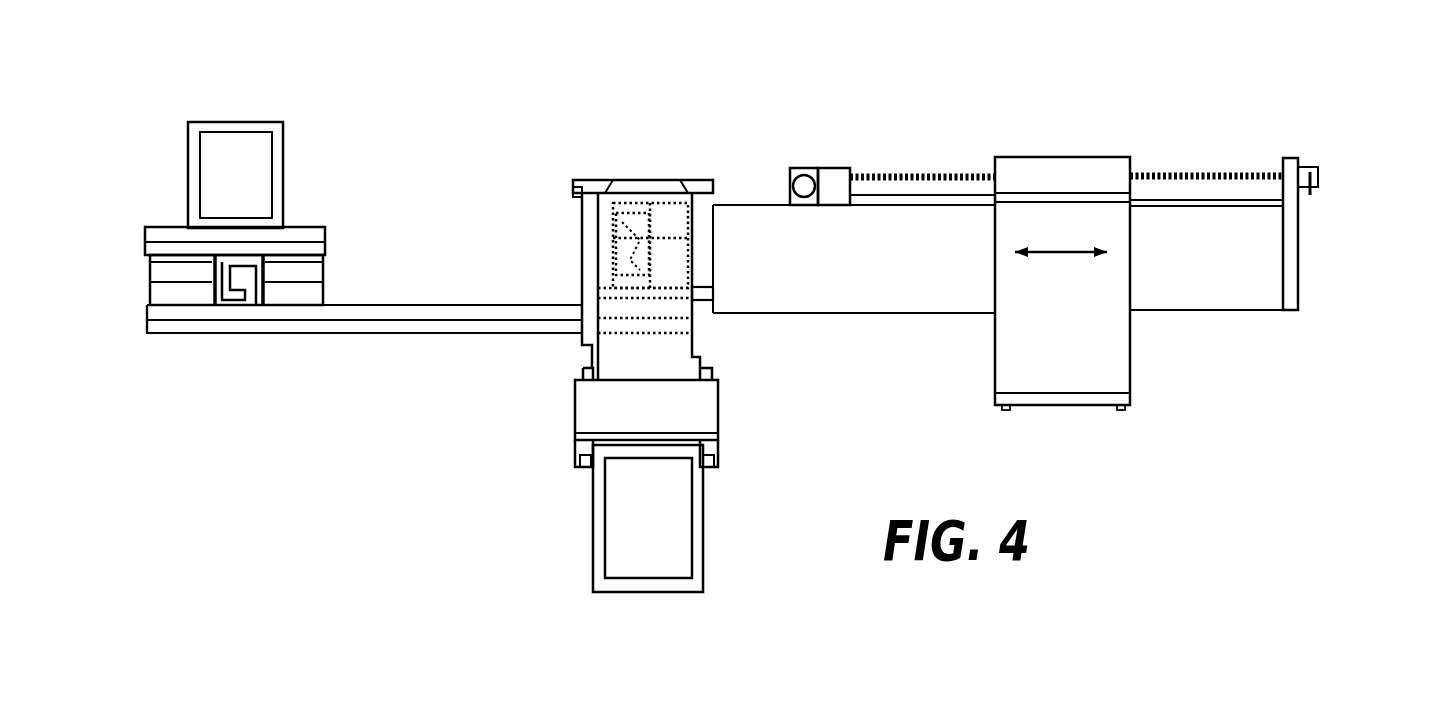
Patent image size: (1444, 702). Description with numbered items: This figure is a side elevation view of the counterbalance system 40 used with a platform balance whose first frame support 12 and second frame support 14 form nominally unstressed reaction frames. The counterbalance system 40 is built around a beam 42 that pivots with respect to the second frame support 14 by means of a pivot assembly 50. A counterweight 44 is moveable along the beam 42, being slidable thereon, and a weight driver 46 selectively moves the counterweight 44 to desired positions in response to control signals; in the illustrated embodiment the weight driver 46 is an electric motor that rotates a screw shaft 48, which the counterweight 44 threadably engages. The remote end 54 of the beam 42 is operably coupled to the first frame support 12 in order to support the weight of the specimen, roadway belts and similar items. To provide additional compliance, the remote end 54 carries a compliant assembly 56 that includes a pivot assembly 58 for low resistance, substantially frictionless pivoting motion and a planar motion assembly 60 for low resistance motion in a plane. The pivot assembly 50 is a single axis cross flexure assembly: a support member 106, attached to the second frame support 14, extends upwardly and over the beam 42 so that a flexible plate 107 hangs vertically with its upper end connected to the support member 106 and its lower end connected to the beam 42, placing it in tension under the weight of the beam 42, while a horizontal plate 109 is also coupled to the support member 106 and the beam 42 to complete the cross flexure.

The first frame support 12 is at (282, 167).
The second frame support 14 is at (702, 520).
The counterbalance system 40 is at (1111, 252).
The beam 42 is at (393, 335).
The counterweight 44 is at (1098, 405).
The weight driver 46 is at (828, 148).
The screw shaft 48 is at (933, 170).
The pivot assembly 50 is at (630, 309).
The remote end 54 is at (137, 362).
The compliant assembly 56 is at (295, 183).
The pivot assembly 58 is at (342, 275).
The planar motion assembly 60 is at (342, 230).
The support member 106 is at (692, 358).
The flexible plate 107 is at (633, 163).
The horizontal plate 109 is at (612, 267).